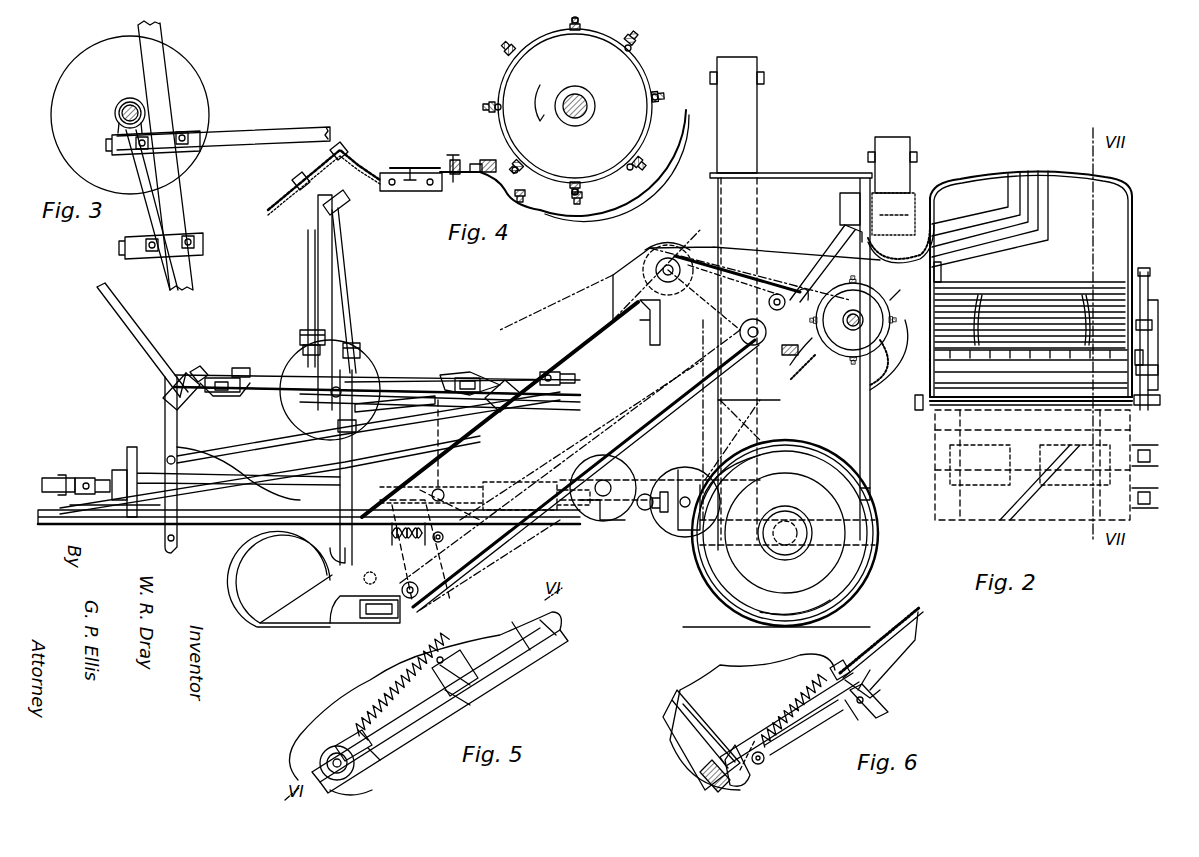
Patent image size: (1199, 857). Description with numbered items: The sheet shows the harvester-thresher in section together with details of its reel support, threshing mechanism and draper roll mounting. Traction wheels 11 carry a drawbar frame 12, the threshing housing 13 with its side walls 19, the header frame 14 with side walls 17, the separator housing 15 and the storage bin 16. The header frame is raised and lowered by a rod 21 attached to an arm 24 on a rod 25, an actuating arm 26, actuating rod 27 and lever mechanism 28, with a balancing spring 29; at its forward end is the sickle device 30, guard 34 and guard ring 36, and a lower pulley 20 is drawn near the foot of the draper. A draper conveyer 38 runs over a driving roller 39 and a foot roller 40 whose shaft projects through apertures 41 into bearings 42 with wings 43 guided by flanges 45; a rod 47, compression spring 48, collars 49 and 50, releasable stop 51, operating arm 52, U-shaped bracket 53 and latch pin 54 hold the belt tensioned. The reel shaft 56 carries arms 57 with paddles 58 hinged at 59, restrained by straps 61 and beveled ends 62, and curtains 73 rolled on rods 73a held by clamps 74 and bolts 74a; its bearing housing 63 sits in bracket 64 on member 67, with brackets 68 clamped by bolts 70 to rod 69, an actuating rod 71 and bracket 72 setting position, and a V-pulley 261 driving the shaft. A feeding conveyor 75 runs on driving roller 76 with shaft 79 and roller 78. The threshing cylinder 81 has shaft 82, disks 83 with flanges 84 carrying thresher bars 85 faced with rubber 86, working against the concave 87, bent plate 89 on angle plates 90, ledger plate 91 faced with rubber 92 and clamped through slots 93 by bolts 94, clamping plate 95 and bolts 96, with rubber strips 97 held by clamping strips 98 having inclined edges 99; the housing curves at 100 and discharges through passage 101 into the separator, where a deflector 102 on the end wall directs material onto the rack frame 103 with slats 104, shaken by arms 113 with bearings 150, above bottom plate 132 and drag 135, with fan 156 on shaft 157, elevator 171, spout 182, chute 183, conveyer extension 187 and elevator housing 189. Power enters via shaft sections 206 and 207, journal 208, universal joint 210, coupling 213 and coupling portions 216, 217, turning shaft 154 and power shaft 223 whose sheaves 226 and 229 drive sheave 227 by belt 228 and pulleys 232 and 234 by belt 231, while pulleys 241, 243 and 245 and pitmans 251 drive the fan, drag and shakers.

In FIG. 2, the supporting and traction wheels 11 is at (710, 587).
In FIG. 2, the drawbar frame 12 is at (288, 480).
In FIG. 2, the housing for the threshing mechanism 13 is at (870, 252).
In FIG. 2, the header frame 14 is at (510, 540).
In FIG. 2, the separator housing 15 is at (1134, 228).
In FIG. 2, the storage bin 16 is at (778, 180).
In FIG. 2, the side walls of the header frame 17 is at (590, 360).
In FIG. 2, the side walls of the housing 19 is at (616, 296).
In FIG. 2, the lower pulley 20 is at (415, 590).
In FIG. 2, the rod 21 is at (388, 557).
In FIG. 2, the arm 24 is at (412, 523).
In FIG. 2, the rod 25 is at (446, 490).
In FIG. 2, the actuating arm 26 is at (430, 422).
In FIG. 2, the actuating rod 27 is at (242, 450).
In FIG. 2, the lever mechanism 28 is at (165, 426).
In FIG. 2, the balancing spring 29 is at (436, 542).
In FIG. 2, the sickle device 30 is at (380, 623).
In FIG. 2, the shield or guard 34 is at (300, 582).
In FIG. 2, the guard ring 36 is at (233, 587).
In FIG. 2, the traveling conveyer 38 is at (650, 406).
In FIG. 5, the traveling conveyer 38 is at (425, 696).
In FIG. 6, the traveling conveyer 38 is at (772, 672).
In FIG. 2, the driving roller 39 is at (748, 327).
In FIG. 6, the lower or foot roller 40 is at (712, 700).
In FIG. 5, the elongated apertures 41 is at (398, 760).
In FIG. 6, the elongated apertures 41 is at (760, 742).
In FIG. 5, the adjustable bearings 42 is at (326, 768).
In FIG. 6, the adjustable bearings 42 is at (745, 752).
In FIG. 5, the guide or positioning wings 43 is at (322, 757).
In FIG. 6, the guide or positioning wings 43 is at (755, 786).
In FIG. 5, the guide walls or flanges 45 is at (372, 777).
In FIG. 6, the guide walls or flanges 45 is at (712, 792).
In FIG. 5, the rod 47 is at (462, 657).
In FIG. 6, the rod 47 is at (870, 692).
In FIG. 5, the compression spring 48 is at (400, 700).
In FIG. 6, the compression spring 48 is at (825, 727).
In FIG. 5, the collar 49 is at (360, 740).
In FIG. 6, the collar 49 is at (788, 754).
In FIG. 5, the collar 50 is at (448, 712).
In FIG. 6, the collar 50 is at (856, 720).
In FIG. 6, the releasable stop 51 is at (845, 666).
In FIG. 2, the operating arm 52 is at (520, 615).
In FIG. 5, the operating arm 52 is at (534, 635).
In FIG. 6, the operating arm 52 is at (915, 634).
In FIG. 5, the U-shaped bracket 53 is at (480, 690).
In FIG. 6, the U-shaped bracket 53 is at (880, 700).
In FIG. 5, the removable latch or pin 54 is at (440, 657).
In FIG. 6, the removable latch or pin 54 is at (866, 706).
In FIG. 3, the reel shaft 56 is at (116, 124).
In FIG. 2, the reel shaft 56 is at (330, 392).
In FIG. 2, the reel arms 57 is at (333, 280).
In FIG. 2, the paddle or bat 58 is at (163, 406).
In FIG. 2, the hinge connection 59 is at (218, 378).
In FIG. 2, the flexible inextensible straps 61 is at (172, 374).
In FIG. 2, the beveled ends 62 is at (200, 367).
In FIG. 3, the tubular supporting housing 63 is at (119, 108).
In FIG. 3, the strap like bracket 64 is at (129, 104).
In FIG. 3, the vertically extending member 67 is at (138, 228).
In FIG. 3, the U-shaped brackets 68 is at (122, 150).
In FIG. 3, the vertical rod 69 is at (180, 214).
In FIG. 2, the vertical rod 69 is at (340, 298).
In FIG. 3, the cross bolts 70 is at (172, 130).
In FIG. 3, the actuating rod 71 is at (264, 131).
In FIG. 2, the actuating rod 71 is at (503, 380).
In FIG. 2, the U-shaped supporting bracket 72 is at (545, 372).
In FIG. 2, the flexible curtain 73 is at (308, 285).
In FIG. 2, the rod 73a is at (305, 325).
In FIG. 2, the removable clamps 74 is at (300, 338).
In FIG. 2, the clamping bolts 74a is at (345, 350).
In FIG. 2, the feeding conveyor 75 is at (740, 272).
In FIG. 2, the driving roller 76 is at (675, 280).
In FIG. 2, the second roller 78 is at (778, 294).
In FIG. 2, the shaft 79 is at (664, 268).
In FIG. 4, the threshing cylinder 81 is at (596, 68).
In FIG. 2, the threshing cylinder 81 is at (840, 327).
In FIG. 4, the operating shaft 82 is at (574, 120).
In FIG. 2, the operating shaft 82 is at (853, 310).
In FIG. 4, the annular members or disks 83 is at (637, 80).
In FIG. 4, the peripheral flanges 84 is at (645, 126).
In FIG. 4, the thresher bars 85 is at (632, 40).
In FIG. 2, the thresher bars 85 is at (845, 284).
In FIG. 4, the wearing surface 86 is at (624, 36).
In FIG. 4, the concave housing portion 87 is at (648, 180).
In FIG. 2, the concave housing portion 87 is at (835, 382).
In FIG. 4, the bent plate 89 is at (350, 165).
In FIG. 4, the angle plates 90 is at (395, 192).
In FIG. 4, the ledger plate 91 is at (488, 168).
In FIG. 2, the ledger plate 91 is at (798, 350).
In FIG. 4, the resilient material 92 is at (478, 164).
In FIG. 4, the elongated slots 93 is at (452, 178).
In FIG. 4, the bolts 94 is at (458, 158).
In FIG. 4, the upper clamping plate 95 is at (414, 166).
In FIG. 4, the bolts 96 is at (398, 166).
In FIG. 4, the bars or strips 97 is at (573, 215).
In FIG. 4, the angular clamping strips 98 is at (588, 193).
In FIG. 4, the inclined leading edges 99 is at (560, 205).
In FIG. 2, the curved forward end of housing 100 is at (804, 290).
In FIG. 2, the discharge opening or passage 101 is at (941, 272).
In FIG. 2, the deflector 102 is at (1050, 205).
In FIG. 2, the straw rack frame 103 is at (940, 354).
In FIG. 2, the slats 104 is at (1062, 284).
In FIG. 2, the shaking arms or levers 113 is at (912, 396).
In FIG. 2, the bottom plate 132 is at (1018, 400).
In FIG. 2, the grain drag or rake 135 is at (1080, 390).
In FIG. 2, the bearing portions 150 is at (1152, 372).
In FIG. 2, the shaft 154 is at (1060, 520).
In FIG. 2, the fan 156 is at (978, 477).
In FIG. 2, the fan shaft 157 is at (1045, 480).
In FIG. 2, the elevator 171 is at (912, 180).
In FIG. 2, the discharge spout 182 is at (850, 210).
In FIG. 2, the chute 183 is at (836, 234).
In FIG. 2, the conveyer housing extension 187 is at (895, 512).
In FIG. 2, the elevating conveyer housing 189 is at (757, 148).
In FIG. 2, the forward shaft section 206 is at (205, 480).
In FIG. 2, the rear shaft section 207 is at (635, 512).
In FIG. 2, the spherical journal portion 208 is at (112, 468).
In FIG. 2, the universal joint 210 is at (82, 476).
In FIG. 2, the intermediate shaft coupling 213 is at (50, 476).
In FIG. 2, the forward coupling portion 216 is at (514, 482).
In FIG. 2, the rear coupling portion 217 is at (552, 515).
In FIG. 2, the power shaft 223 is at (684, 520).
In FIG. 2, the V-groove sheave 226 is at (673, 470).
In FIG. 2, the V-groove sheave 227 is at (925, 296).
In FIG. 2, the V-belt 228 is at (810, 426).
In FIG. 2, the second V-groove sheave 229 is at (660, 515).
In FIG. 2, the V-belt 231 is at (704, 332).
In FIG. 2, the V-pulley 232 is at (675, 246).
In FIG. 2, the V-pulley 234 is at (590, 512).
In FIG. 2, the V-pulley 241 is at (1150, 502).
In FIG. 2, the V-pulley 243 is at (1150, 452).
In FIG. 2, the V-pulley 245 is at (1146, 270).
In FIG. 2, the pitmans 251 is at (1152, 336).
In FIG. 3, the V-pulley 261 is at (186, 62).